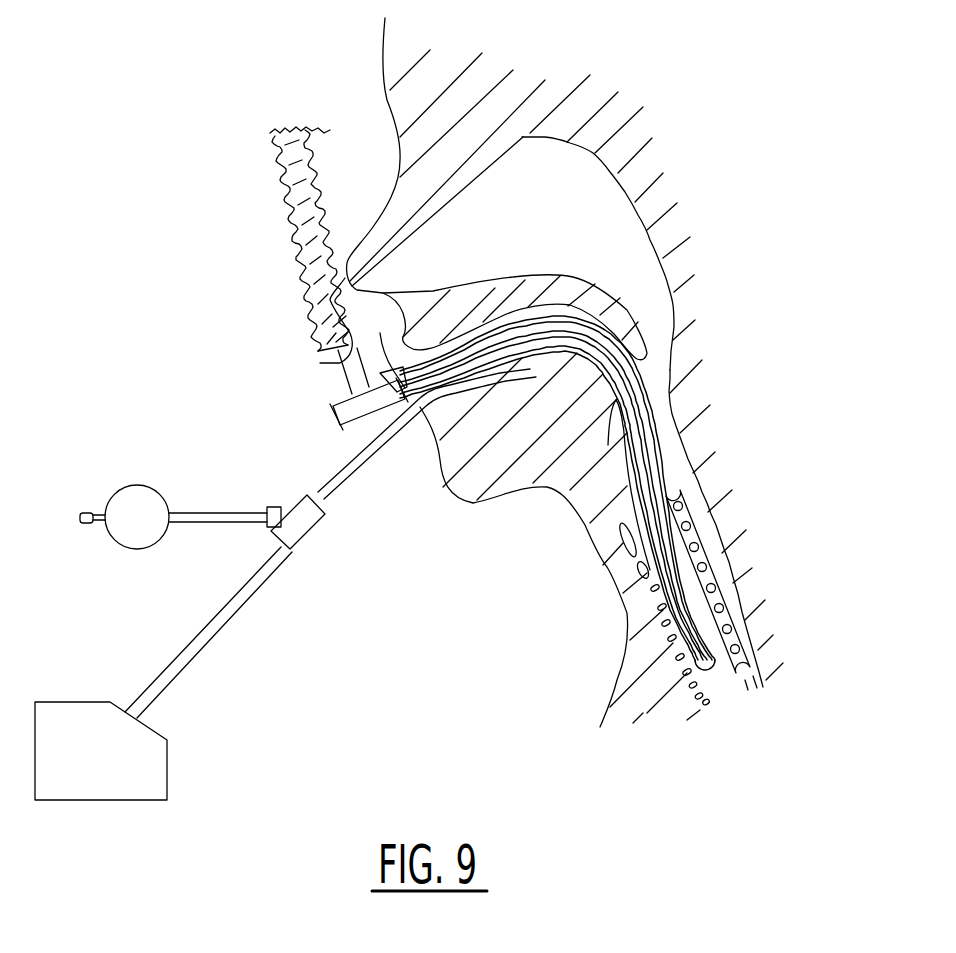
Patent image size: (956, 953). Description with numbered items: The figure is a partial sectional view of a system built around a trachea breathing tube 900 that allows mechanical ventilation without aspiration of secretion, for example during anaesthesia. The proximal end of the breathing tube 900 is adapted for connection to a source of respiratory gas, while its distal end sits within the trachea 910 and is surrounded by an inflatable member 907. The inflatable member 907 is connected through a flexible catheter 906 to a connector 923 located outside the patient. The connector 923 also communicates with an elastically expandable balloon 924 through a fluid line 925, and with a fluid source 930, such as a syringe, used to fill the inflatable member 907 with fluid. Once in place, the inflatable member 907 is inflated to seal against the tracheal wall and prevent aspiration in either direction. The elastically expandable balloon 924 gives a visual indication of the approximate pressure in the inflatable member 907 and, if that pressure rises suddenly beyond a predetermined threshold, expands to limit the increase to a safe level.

The trachea breathing tube 900 is at (410, 330).
The flexible catheter 906 is at (340, 467).
The inflatable member 907 is at (707, 603).
The trachea 910 is at (700, 680).
The connector 923 is at (300, 503).
The elastically expandable balloon 924 is at (137, 485).
The fluid line 925 is at (217, 523).
The fluid source 930 is at (110, 787).